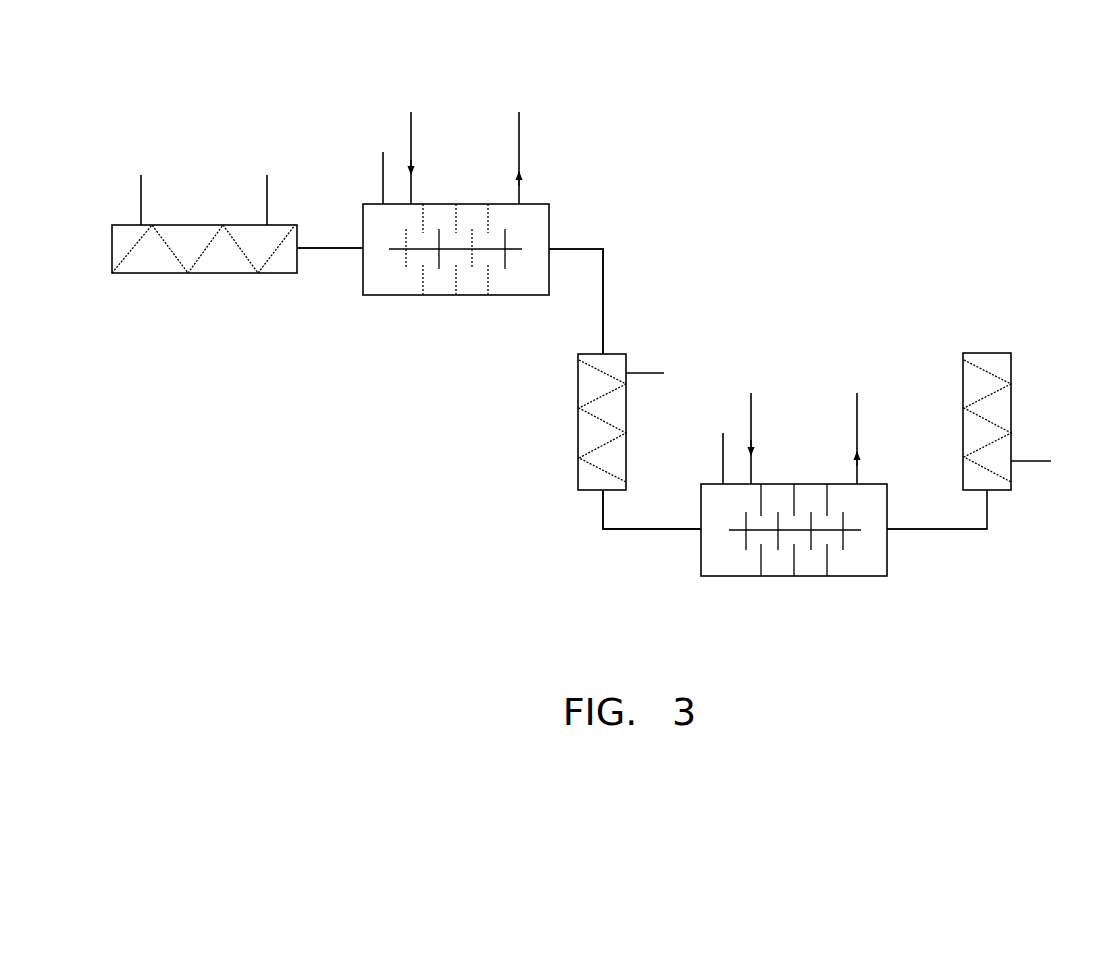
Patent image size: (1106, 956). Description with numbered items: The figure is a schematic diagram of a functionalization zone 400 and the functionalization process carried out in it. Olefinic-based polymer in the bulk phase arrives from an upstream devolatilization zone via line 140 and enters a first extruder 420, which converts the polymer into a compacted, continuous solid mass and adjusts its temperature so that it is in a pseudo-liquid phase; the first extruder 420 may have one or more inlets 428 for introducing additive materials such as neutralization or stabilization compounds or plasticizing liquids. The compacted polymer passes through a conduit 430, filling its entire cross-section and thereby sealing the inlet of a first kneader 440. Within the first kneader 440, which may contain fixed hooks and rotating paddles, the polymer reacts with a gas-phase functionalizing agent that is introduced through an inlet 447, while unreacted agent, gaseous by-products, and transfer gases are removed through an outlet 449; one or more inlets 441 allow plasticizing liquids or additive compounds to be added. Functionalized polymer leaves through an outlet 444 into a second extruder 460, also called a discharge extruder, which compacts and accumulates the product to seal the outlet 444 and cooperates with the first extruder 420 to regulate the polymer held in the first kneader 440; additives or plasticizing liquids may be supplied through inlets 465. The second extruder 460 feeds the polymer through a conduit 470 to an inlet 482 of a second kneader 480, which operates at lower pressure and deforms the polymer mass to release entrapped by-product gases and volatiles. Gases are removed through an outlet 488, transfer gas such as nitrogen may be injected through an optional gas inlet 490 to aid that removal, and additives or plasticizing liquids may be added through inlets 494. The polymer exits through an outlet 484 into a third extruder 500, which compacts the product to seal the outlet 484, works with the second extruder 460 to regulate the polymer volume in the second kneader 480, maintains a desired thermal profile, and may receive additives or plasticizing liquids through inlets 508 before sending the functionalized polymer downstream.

The line 140 is at (141, 198).
The first extruder 420 is at (206, 224).
The inlets 428 is at (268, 198).
The conduit 430 is at (330, 251).
The first kneader 440 is at (461, 200).
The inlets 441 is at (382, 183).
The inlet 447 is at (410, 138).
The outlet 449 is at (520, 137).
The outlet 444 is at (576, 248).
The functionalization zone 400 is at (796, 158).
The second extruder 460 is at (576, 422).
The inlets 465 is at (645, 372).
The conduit 470 is at (625, 530).
The second kneader 480 is at (799, 483).
The inlets 494 is at (722, 465).
The gas inlet 490 is at (750, 420).
The outlet 488 is at (857, 420).
The inlet 482 is at (702, 530).
The outlet 484 is at (887, 530).
The third extruder 500 is at (1014, 410).
The inlets 508 is at (1030, 462).